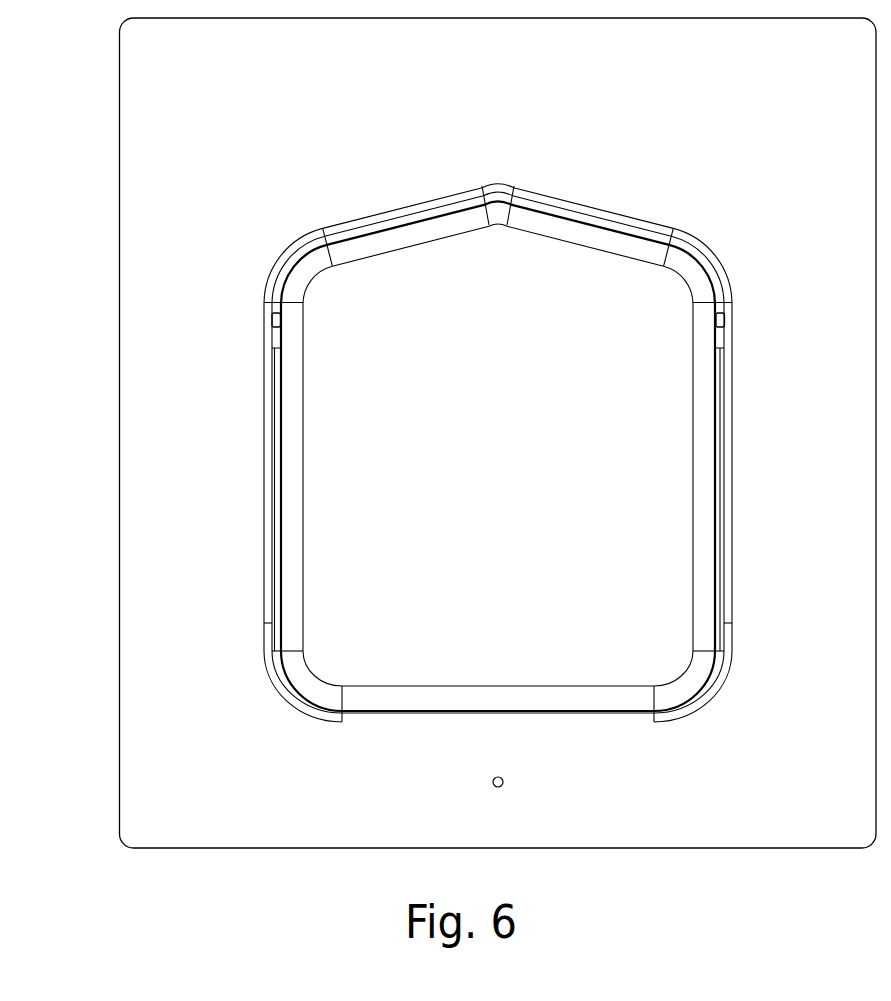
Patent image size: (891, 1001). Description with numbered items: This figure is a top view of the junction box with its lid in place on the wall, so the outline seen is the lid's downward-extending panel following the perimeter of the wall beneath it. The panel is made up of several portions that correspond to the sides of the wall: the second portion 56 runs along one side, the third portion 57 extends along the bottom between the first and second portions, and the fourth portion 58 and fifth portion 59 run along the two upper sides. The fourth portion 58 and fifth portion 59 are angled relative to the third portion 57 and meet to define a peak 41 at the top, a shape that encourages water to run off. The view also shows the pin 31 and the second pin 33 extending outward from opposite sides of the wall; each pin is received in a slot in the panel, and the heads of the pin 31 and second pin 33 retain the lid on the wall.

The pin 31 is at (727, 318).
The second pin 33 is at (272, 318).
The peak 41 is at (500, 165).
The second portion 56 is at (245, 533).
The third portion 57 is at (608, 740).
The fourth portion 58 is at (392, 190).
The fifth portion 59 is at (641, 191).